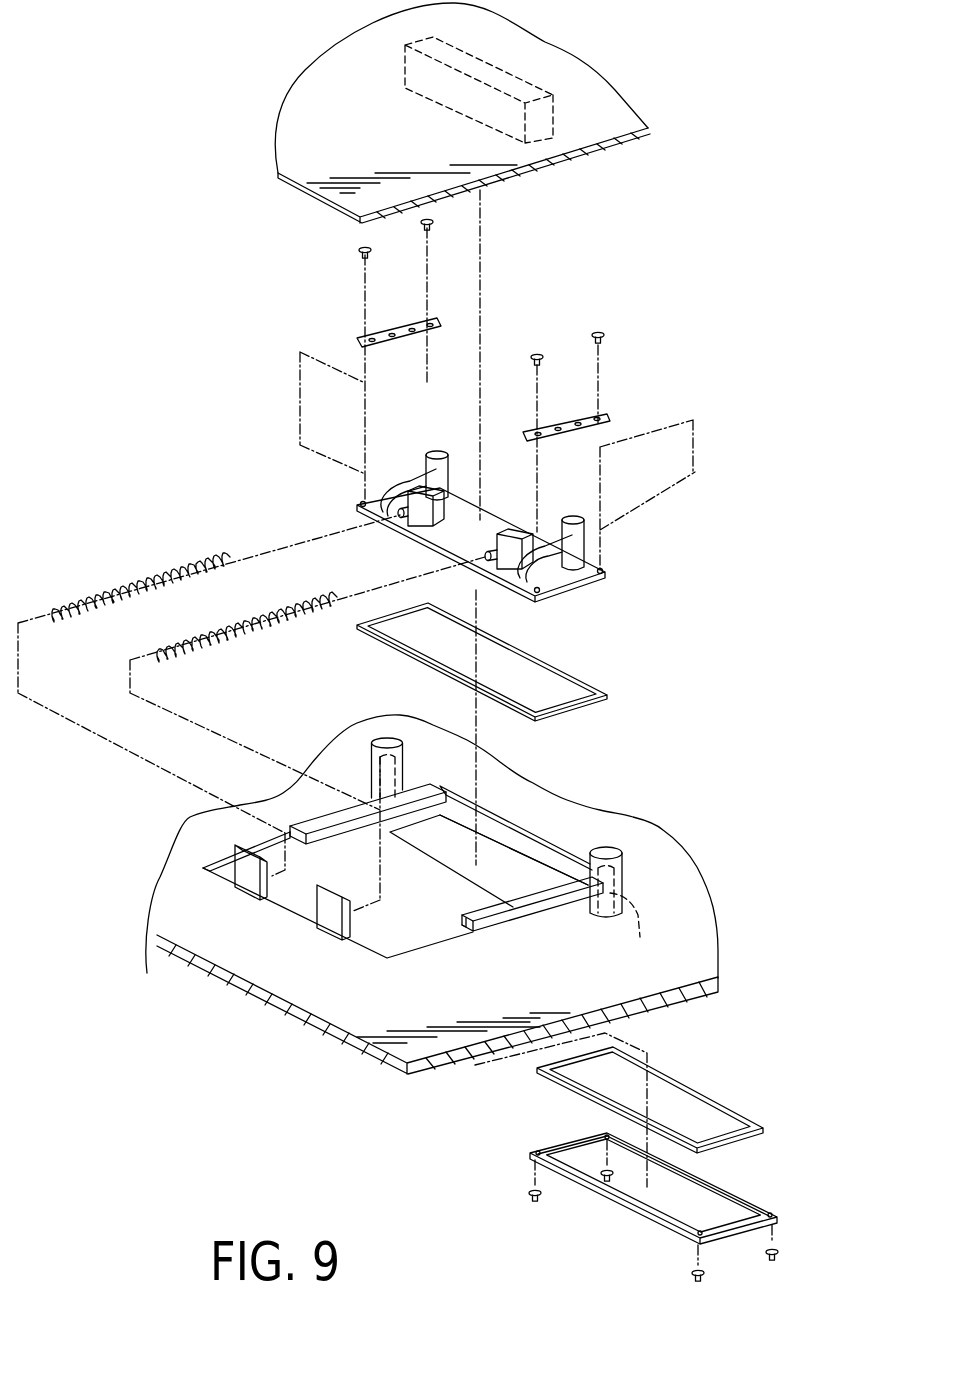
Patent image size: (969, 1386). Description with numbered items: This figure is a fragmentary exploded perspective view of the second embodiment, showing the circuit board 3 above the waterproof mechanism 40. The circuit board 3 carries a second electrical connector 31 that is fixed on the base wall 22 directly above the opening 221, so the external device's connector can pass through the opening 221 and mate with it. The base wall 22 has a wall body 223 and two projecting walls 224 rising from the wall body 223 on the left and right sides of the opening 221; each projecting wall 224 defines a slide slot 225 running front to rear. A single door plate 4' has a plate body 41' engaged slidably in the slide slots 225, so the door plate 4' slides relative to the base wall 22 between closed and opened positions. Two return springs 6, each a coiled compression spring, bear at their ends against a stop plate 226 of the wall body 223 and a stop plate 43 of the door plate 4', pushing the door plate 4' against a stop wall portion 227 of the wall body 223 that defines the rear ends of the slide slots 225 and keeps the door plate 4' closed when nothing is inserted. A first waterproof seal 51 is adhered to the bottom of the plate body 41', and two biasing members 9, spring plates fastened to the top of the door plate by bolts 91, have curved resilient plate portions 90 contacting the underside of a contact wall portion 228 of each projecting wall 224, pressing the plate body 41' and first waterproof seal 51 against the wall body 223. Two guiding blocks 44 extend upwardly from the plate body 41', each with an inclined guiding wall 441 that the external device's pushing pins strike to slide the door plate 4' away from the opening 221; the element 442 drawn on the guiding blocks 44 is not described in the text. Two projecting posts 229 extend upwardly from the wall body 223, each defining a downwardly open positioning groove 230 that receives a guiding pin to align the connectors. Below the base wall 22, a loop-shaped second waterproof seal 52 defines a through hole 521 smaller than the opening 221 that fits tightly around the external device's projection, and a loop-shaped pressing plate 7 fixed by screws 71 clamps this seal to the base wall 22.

The circuit board 3 is at (470, 113).
The second electrical connector 31 is at (543, 128).
The biasing members 9 is at (387, 333).
The curved resilient plate portions 90 is at (588, 450).
The bolts 91 is at (598, 333).
The door plate 4' is at (441, 522).
The waterproof mechanism 40 is at (441, 523).
The plate body 41' is at (481, 506).
The guiding blocks 44 is at (497, 523).
The inclined guiding wall 441 is at (568, 583).
The post 442 is at (577, 522).
The stop plate 43 is at (510, 563).
The return springs 6 is at (233, 632).
The first waterproof seal 51 is at (395, 645).
The base wall 22 is at (439, 881).
The opening 221 is at (488, 853).
The wall body 223 is at (315, 993).
The projecting walls 224 is at (400, 864).
The slide slot 225 is at (456, 936).
The stop plate 226 is at (332, 922).
The stop wall portion 227 is at (537, 848).
The contact wall portion 228 is at (515, 900).
The projecting posts 229 is at (617, 863).
The positioning groove 230 is at (637, 933).
The second waterproof seal 52 is at (674, 1083).
The through hole 521 is at (670, 1092).
The pressing plate 7 is at (622, 1207).
The screws 71 is at (528, 1194).